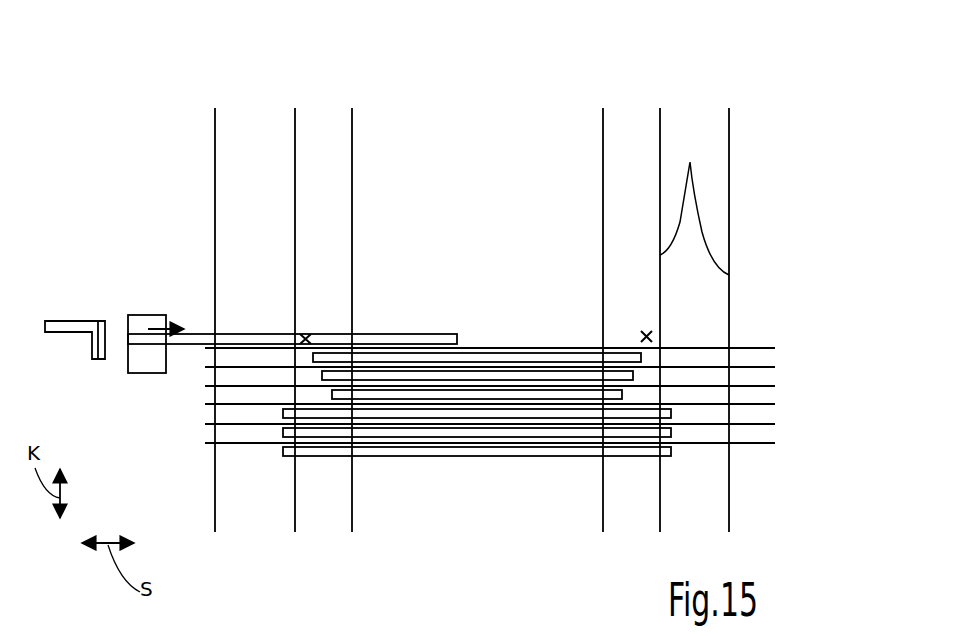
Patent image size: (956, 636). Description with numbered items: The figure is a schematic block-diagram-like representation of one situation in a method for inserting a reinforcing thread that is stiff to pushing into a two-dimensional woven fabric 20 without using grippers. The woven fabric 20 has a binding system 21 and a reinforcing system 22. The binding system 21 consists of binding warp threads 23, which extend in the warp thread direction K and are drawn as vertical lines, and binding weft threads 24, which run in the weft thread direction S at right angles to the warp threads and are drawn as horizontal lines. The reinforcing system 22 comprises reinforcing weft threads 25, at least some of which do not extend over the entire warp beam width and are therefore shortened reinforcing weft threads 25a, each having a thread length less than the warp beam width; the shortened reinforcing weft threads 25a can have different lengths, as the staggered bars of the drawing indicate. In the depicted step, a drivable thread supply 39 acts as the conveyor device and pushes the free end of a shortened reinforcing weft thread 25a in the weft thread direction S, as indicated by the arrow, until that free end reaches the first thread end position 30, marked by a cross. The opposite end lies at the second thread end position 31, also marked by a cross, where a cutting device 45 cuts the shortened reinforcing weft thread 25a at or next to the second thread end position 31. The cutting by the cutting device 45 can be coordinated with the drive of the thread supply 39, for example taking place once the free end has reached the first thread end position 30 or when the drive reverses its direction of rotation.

The two-dimensional woven fabric 20 is at (698, 106).
The binding system 21 is at (748, 182).
The binding warp threads 23 is at (694, 205).
The binding weft threads 24 is at (757, 386).
The reinforcing system 22 is at (399, 377).
The reinforcing weft threads 25 is at (444, 433).
The shortened reinforcing weft threads 25a is at (378, 338).
The first thread end position 30 is at (645, 329).
The second thread end position 31 is at (306, 332).
The thread supply 39 is at (148, 374).
The cutting device 45 is at (88, 322).